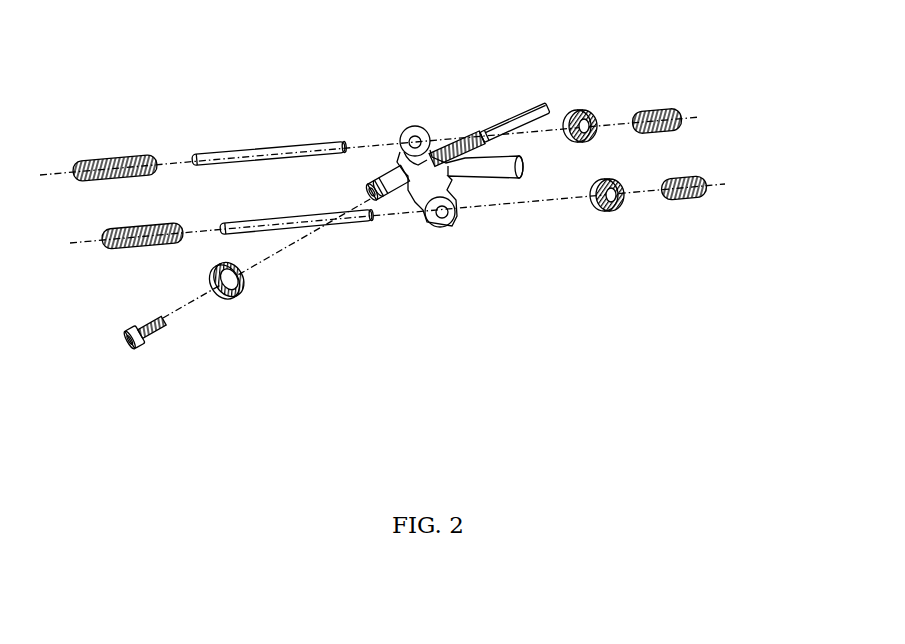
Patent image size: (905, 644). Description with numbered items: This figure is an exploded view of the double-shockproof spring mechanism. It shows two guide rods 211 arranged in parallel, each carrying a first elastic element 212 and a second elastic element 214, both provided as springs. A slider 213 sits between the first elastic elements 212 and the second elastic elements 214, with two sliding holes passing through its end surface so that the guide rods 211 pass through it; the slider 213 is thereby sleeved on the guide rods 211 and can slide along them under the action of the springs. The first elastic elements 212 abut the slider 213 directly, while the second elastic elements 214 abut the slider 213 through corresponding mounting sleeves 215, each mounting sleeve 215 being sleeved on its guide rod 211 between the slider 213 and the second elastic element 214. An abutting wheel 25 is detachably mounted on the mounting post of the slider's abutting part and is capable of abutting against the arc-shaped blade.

The guide rod 211 is at (293, 145).
The first elastic element 212 is at (118, 160).
The slider 213 is at (453, 222).
The second elastic element 214 is at (658, 107).
The mounting sleeve 215 is at (622, 207).
The abutting wheel 25 is at (245, 293).